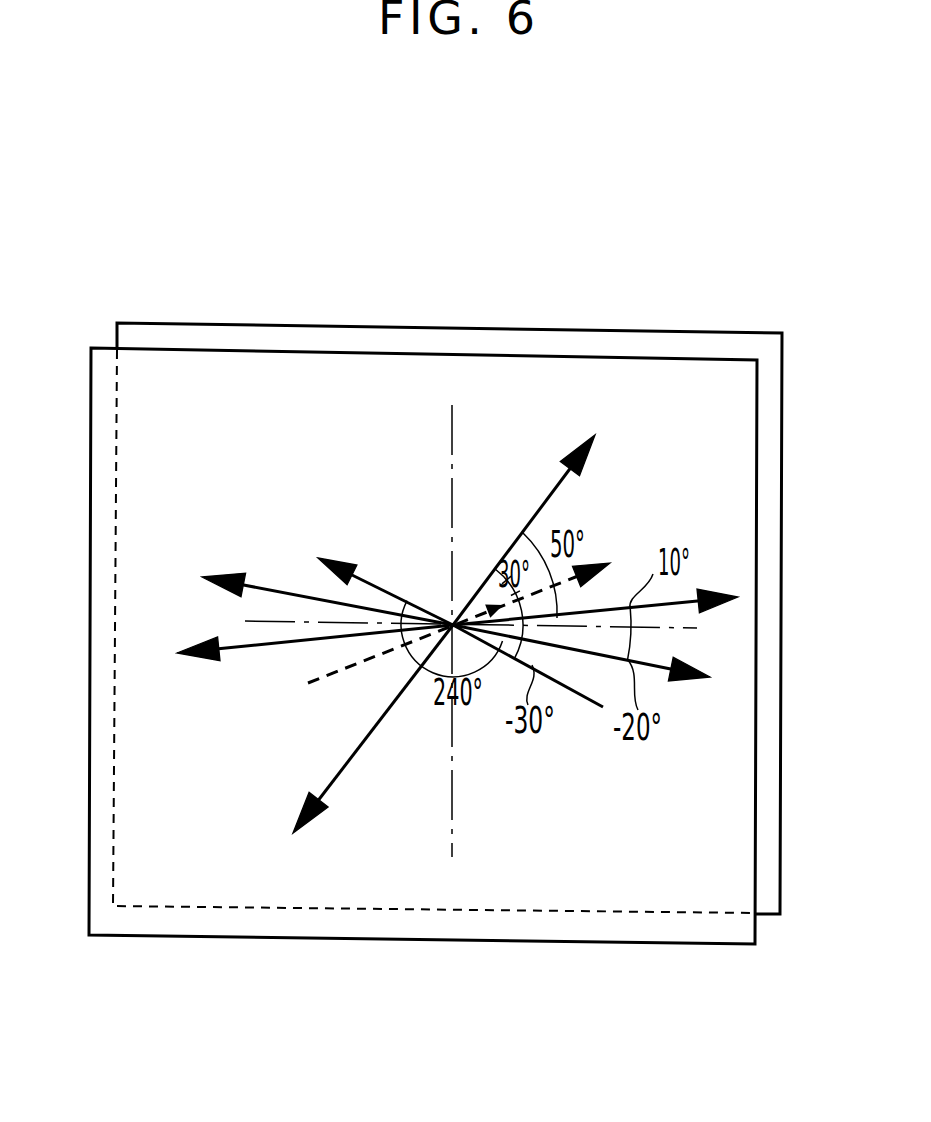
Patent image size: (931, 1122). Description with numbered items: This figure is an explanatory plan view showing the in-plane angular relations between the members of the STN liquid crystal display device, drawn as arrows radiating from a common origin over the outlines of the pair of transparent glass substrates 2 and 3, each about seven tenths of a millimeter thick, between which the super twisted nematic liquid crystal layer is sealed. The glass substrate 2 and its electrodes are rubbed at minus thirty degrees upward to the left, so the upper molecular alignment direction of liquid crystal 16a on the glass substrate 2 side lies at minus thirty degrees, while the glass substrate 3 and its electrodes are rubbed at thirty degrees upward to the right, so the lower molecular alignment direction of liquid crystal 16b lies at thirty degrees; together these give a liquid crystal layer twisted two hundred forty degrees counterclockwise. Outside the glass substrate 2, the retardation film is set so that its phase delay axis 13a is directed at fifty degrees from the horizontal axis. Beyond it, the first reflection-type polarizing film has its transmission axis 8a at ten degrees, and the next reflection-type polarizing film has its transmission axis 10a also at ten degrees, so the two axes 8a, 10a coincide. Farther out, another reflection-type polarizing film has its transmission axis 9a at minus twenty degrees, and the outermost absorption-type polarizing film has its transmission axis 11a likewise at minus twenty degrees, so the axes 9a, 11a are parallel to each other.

The transparent glass substrate 2 is at (92, 680).
The transparent glass substrate 3 is at (772, 695).
The transmission axis 8a is at (315, 698).
The transmission axis 9a is at (327, 537).
The transmission axis 10a is at (243, 643).
The transmission axis 11a is at (258, 585).
The phase delay axis 13a is at (538, 505).
The upper molecular alignment direction of liquid crystal 16a is at (375, 584).
The lower molecular alignment direction of liquid crystal 16b is at (593, 556).